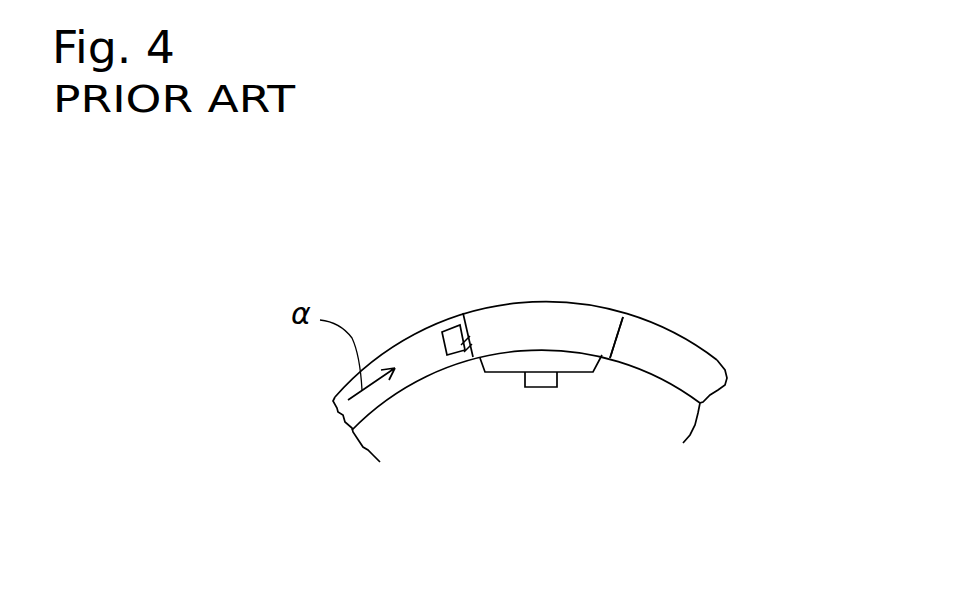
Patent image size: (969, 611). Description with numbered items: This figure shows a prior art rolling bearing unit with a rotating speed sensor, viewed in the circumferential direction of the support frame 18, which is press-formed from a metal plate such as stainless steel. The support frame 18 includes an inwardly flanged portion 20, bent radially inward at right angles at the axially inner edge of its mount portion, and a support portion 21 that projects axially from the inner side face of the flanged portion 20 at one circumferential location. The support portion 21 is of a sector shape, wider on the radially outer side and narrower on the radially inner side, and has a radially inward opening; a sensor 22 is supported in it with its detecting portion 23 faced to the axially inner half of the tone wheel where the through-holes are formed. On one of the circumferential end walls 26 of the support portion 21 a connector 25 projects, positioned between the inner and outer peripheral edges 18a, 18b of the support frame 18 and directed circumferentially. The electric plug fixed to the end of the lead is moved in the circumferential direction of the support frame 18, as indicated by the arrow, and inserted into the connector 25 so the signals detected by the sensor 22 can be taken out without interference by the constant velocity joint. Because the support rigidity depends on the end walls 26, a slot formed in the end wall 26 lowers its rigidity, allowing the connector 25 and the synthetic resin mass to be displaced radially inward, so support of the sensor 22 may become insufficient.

The support frame 18 is at (592, 384).
The inner peripheral edge 18a is at (665, 382).
The outer peripheral edge 18b is at (703, 352).
The inwardly flanged portion 20 is at (703, 372).
The support portion 21 is at (580, 323).
The sensor 22 is at (508, 373).
The detecting portion 23 is at (547, 380).
The connector 25 is at (450, 333).
The circumferential end wall 26 is at (457, 358).